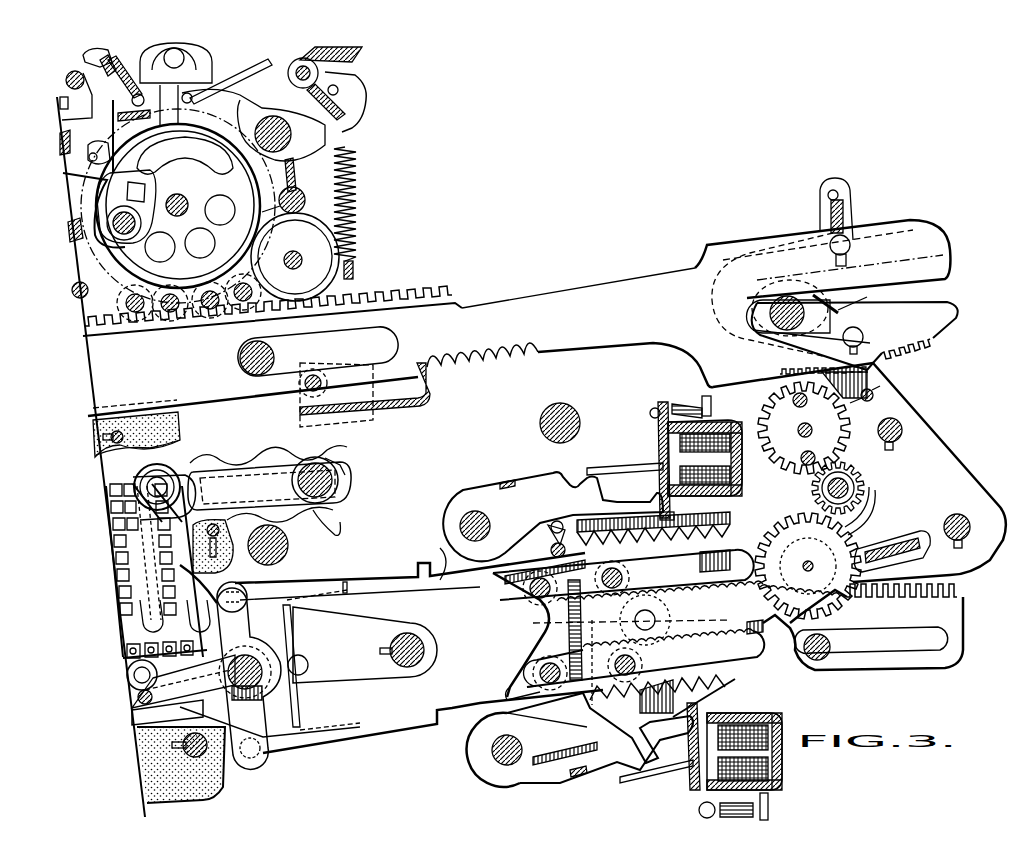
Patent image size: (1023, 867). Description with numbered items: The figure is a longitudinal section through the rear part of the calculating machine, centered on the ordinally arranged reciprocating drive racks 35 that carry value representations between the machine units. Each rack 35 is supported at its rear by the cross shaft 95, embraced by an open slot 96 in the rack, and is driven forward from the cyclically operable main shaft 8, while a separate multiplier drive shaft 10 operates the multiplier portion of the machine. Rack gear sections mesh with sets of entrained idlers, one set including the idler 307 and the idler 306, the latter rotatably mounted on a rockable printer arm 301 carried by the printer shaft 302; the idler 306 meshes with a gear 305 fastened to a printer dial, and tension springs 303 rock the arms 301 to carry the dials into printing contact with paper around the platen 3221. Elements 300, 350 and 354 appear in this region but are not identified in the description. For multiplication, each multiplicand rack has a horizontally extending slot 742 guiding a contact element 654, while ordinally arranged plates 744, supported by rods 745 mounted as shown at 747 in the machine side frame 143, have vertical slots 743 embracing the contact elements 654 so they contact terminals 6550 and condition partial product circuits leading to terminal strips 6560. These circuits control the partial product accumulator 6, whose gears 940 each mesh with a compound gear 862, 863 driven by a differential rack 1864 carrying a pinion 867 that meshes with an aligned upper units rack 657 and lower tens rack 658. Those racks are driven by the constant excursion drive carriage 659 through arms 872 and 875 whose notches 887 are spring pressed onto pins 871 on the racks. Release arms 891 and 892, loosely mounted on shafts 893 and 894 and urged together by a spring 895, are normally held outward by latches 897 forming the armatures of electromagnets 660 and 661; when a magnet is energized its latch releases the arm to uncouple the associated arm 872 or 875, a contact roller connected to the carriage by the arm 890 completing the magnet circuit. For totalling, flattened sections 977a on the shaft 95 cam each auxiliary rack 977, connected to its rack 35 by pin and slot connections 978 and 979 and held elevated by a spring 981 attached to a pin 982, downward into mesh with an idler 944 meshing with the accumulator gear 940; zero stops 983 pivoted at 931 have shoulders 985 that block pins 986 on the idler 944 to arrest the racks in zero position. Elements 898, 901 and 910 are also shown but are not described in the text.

The cap 300 is at (213, 63).
The gear 305 is at (214, 72).
The idler 306 is at (235, 88).
The printer shaft 302 is at (276, 124).
The platen 3221 is at (362, 54).
The tension springs 303 is at (348, 160).
The printer arm 301 is at (296, 163).
The idler 307 is at (222, 196).
The roller 354 is at (294, 252).
The rack 350 is at (389, 302).
The drive rack 35 is at (107, 377).
The main drive shaft 8 is at (290, 549).
The multiplier drive shaft 10 is at (568, 412).
The contact element 654 is at (181, 478).
The plates 744 is at (266, 470).
The rod 745 is at (325, 462).
The side frame mounting 747 is at (340, 473).
The machine side frame 143 is at (350, 496).
The horizontally extending slot 742 is at (110, 493).
The vertical slots 743 is at (116, 553).
The terminals 6550 is at (118, 591).
The terminal strips 6560 is at (125, 648).
The pin 898 is at (127, 677).
The arm 890 is at (132, 710).
The release arm 891 is at (492, 478).
The shaft 893 is at (463, 522).
The pins 871 is at (553, 527).
The notches 887 is at (438, 550).
The arm 872 is at (361, 583).
The drive carriage 659 is at (397, 620).
The units actuating rack 657 is at (485, 604).
The tens actuating rack 658 is at (521, 671).
The pinion 867 is at (560, 623).
The spring 895 is at (546, 659).
The arm 875 is at (380, 730).
The shaft 894 is at (492, 758).
The release arm 892 is at (527, 783).
The electro-magnet 661 is at (690, 796).
The electro-magnet 660 is at (648, 444).
The latch 897 is at (660, 472).
The rack 910 is at (672, 530).
The pin 982 is at (840, 193).
The spring 981 is at (851, 210).
The pin and slot connection 979 is at (852, 248).
The cross shaft 95 is at (790, 300).
The open slot 96 is at (950, 280).
The zero stop 983 is at (851, 302).
The pin and slot connection 978 is at (863, 336).
The auxiliary rack 977 is at (937, 340).
The flattened section 977a is at (745, 347).
The shoulder 985 is at (792, 365).
The idler 944 is at (776, 400).
The carriage 901 is at (793, 385).
The pivot 931 is at (880, 388).
The pins 986 is at (798, 431).
The accumulator gear 940 is at (882, 441).
The partial product accumulator 6 is at (874, 485).
The compound gear 863 is at (765, 609).
The compound gear 862 is at (850, 603).
The differential rack 1864 is at (955, 660).